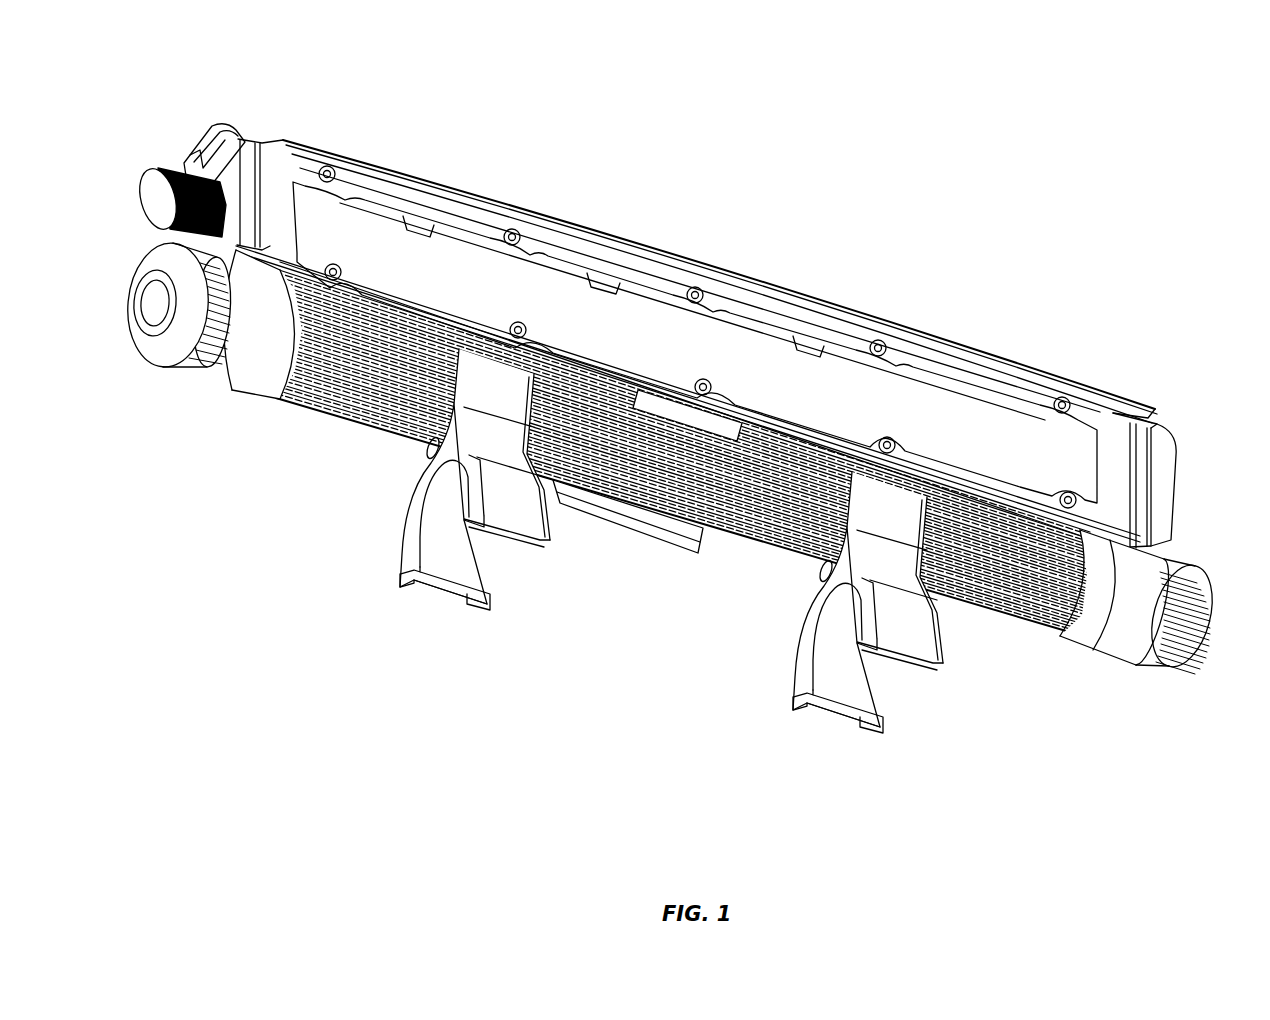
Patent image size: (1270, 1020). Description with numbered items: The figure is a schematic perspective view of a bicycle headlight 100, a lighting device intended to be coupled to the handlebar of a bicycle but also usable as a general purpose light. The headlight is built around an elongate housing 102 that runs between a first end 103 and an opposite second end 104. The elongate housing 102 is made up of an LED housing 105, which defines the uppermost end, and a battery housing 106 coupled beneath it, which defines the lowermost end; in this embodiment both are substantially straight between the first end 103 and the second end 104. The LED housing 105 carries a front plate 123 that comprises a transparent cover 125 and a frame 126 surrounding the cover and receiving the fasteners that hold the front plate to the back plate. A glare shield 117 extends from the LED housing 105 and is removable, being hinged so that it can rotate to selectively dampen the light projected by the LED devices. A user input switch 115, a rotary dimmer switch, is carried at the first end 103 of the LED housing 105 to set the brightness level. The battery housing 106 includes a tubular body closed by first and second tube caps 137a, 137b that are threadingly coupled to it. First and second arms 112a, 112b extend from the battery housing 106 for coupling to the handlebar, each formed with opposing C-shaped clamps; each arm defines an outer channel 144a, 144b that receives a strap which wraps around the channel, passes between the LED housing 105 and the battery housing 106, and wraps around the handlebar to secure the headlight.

The bicycle headlight 100 is at (910, 106).
The elongate housing 102 is at (1170, 414).
The first end 103 is at (180, 157).
The second end 104 is at (1166, 492).
The LED housing 105 is at (910, 365).
The battery housing 106 is at (766, 542).
The first arm 112a is at (433, 596).
The second arm 112b is at (837, 714).
The user input switch 115 is at (157, 197).
The glare shield 117 is at (766, 282).
The front plate 123 is at (797, 328).
The transparent cover 125 is at (627, 300).
The frame 126 is at (580, 220).
The first tube cap 137a is at (168, 362).
The second tube cap 137b is at (1183, 618).
The outer channel 144a is at (442, 448).
The outer channel 144b is at (920, 660).